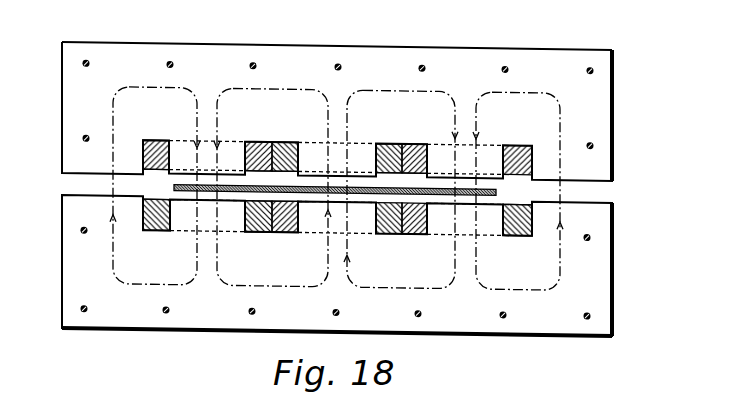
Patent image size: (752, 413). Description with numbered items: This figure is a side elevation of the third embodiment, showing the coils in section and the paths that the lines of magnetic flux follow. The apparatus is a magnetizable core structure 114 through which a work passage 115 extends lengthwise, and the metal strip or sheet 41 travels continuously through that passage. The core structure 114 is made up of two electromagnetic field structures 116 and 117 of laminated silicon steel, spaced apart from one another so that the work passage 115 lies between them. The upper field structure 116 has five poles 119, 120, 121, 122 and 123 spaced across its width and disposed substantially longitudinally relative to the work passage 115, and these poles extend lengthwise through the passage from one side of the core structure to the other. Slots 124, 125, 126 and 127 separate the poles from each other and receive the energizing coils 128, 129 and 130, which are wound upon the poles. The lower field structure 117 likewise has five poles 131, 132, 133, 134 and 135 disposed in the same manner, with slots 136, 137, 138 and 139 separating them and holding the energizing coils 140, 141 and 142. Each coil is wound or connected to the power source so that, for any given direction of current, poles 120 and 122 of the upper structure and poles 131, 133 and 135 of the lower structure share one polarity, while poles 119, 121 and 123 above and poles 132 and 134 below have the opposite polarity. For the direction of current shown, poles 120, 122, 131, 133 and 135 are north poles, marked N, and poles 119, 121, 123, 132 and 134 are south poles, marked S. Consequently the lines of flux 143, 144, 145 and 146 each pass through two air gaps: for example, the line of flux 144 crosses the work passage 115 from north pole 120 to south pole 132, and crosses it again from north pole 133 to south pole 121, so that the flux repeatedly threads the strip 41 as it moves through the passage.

The metal strip 41 is at (174, 185).
The magnetizable core structure 114 is at (658, 99).
The work passage 115 is at (602, 185).
The electromagnetic field structure 116 is at (318, 43).
The electromagnetic field structure 117 is at (462, 328).
The pole 119 is at (88, 162).
The pole 120 is at (201, 143).
The pole 121 is at (336, 143).
The pole 122 is at (466, 147).
The pole 123 is at (581, 156).
The slot 124 is at (160, 138).
The slot 125 is at (278, 139).
The slot 126 is at (395, 139).
The slot 127 is at (515, 139).
The energizing coil 128 is at (143, 146).
The energizing coil 129 is at (298, 147).
The energizing coil 130 is at (427, 147).
The pole 131 is at (88, 207).
The pole 132 is at (206, 218).
The pole 133 is at (337, 223).
The pole 134 is at (465, 223).
The pole 135 is at (580, 210).
The slot 136 is at (158, 230).
The slot 137 is at (267, 229).
The slot 138 is at (420, 229).
The slot 139 is at (517, 229).
The energizing coil 140 is at (142, 222).
The energizing coil 141 is at (298, 221).
The energizing coil 142 is at (532, 222).
The line of flux 143 is at (148, 86).
The line of flux 144 is at (267, 86).
The line of flux 145 is at (382, 86).
The line of flux 146 is at (520, 86).